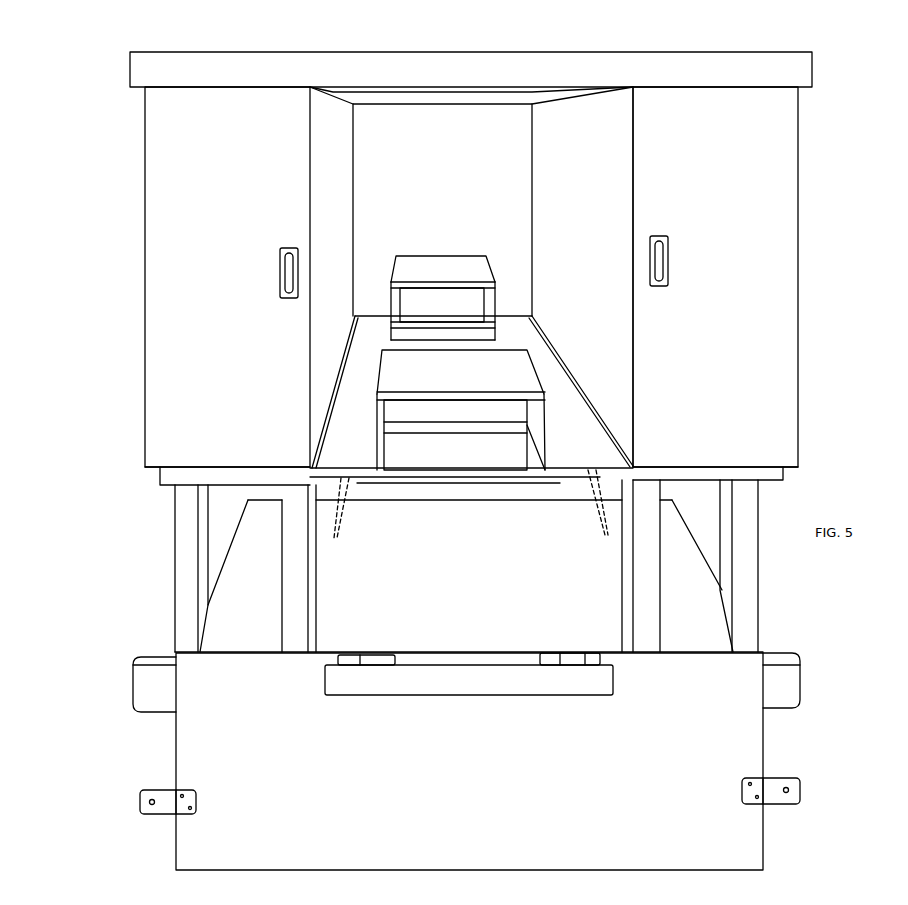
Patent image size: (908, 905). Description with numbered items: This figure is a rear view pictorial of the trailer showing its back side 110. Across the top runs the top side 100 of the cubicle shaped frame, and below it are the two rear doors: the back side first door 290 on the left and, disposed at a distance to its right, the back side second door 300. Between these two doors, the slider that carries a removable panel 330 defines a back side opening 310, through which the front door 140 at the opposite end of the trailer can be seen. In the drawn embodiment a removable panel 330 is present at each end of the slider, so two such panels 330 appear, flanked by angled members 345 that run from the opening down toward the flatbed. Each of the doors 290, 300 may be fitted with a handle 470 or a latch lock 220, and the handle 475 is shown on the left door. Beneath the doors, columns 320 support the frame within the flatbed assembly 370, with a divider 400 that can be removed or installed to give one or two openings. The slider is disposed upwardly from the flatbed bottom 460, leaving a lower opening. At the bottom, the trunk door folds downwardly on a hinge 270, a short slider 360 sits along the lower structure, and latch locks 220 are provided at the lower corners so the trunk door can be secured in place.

The top side 100 is at (791, 49).
The back side 110 is at (718, 277).
The front door 140 is at (449, 184).
The latch lock 220 is at (158, 790).
The hinge 270 is at (513, 672).
The back side first door 290 is at (249, 346).
The back side second door 300 is at (726, 356).
The back side opening 310 is at (555, 194).
The column 320 is at (292, 617).
The removable panel 330 is at (457, 275).
The diagonal member 345 is at (336, 374).
The short slider 360 is at (472, 761).
The flatbed assembly 370 is at (173, 535).
The divider 400 is at (400, 492).
The flatbed bottom 460 is at (470, 581).
The handle 470 is at (686, 261).
The handle 475 is at (280, 268).